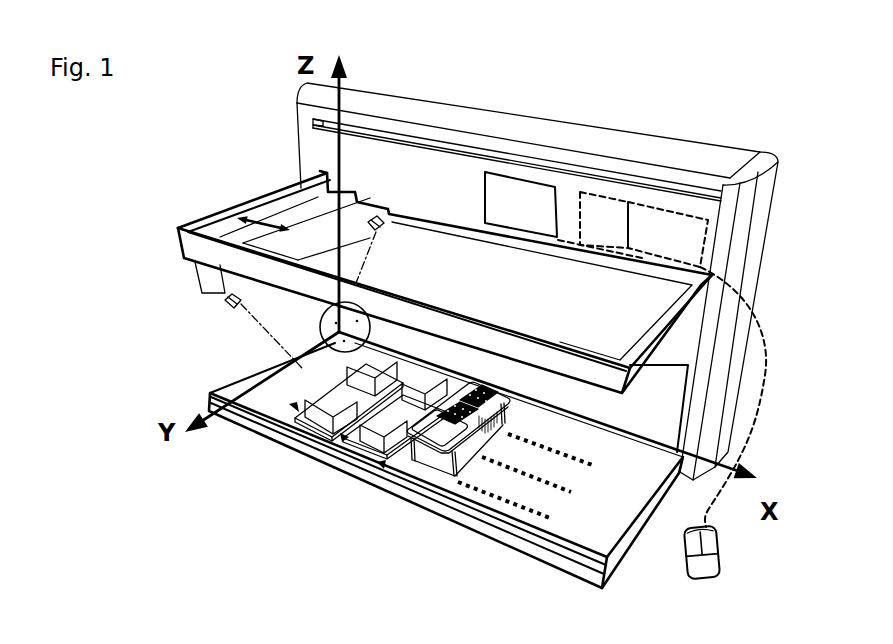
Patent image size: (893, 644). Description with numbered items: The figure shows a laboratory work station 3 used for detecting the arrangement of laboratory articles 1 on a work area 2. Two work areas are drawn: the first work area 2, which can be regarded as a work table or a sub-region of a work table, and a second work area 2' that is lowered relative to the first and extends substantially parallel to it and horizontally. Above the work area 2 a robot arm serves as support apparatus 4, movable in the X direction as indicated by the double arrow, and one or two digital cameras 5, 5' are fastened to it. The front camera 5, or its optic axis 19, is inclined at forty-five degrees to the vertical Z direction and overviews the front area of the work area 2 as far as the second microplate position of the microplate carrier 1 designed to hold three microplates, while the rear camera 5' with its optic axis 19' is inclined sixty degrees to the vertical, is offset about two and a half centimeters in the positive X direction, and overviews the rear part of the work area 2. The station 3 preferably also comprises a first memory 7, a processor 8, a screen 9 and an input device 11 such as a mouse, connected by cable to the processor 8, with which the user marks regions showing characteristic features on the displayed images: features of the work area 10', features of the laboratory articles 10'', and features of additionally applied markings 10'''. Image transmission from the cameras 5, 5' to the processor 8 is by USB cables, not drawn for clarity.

The laboratory articles 1 is at (324, 423).
The work area 2 is at (446, 465).
The second work area 2' is at (253, 438).
The laboratory work station 3 is at (400, 187).
The support apparatus 4 is at (263, 222).
The digital camera 5 is at (171, 343).
The rear digital camera 5' is at (420, 237).
The first memory 7 is at (607, 237).
The processor 8 is at (674, 234).
The screen 9 is at (514, 212).
The features of the work area 10' is at (525, 506).
The features of the laboratory articles 10'' is at (417, 480).
The features of additionally applied markings 10''' is at (297, 480).
The input device 11 is at (702, 563).
The optic axis 19 is at (239, 348).
The optic axis of the rear camera 19' is at (423, 261).